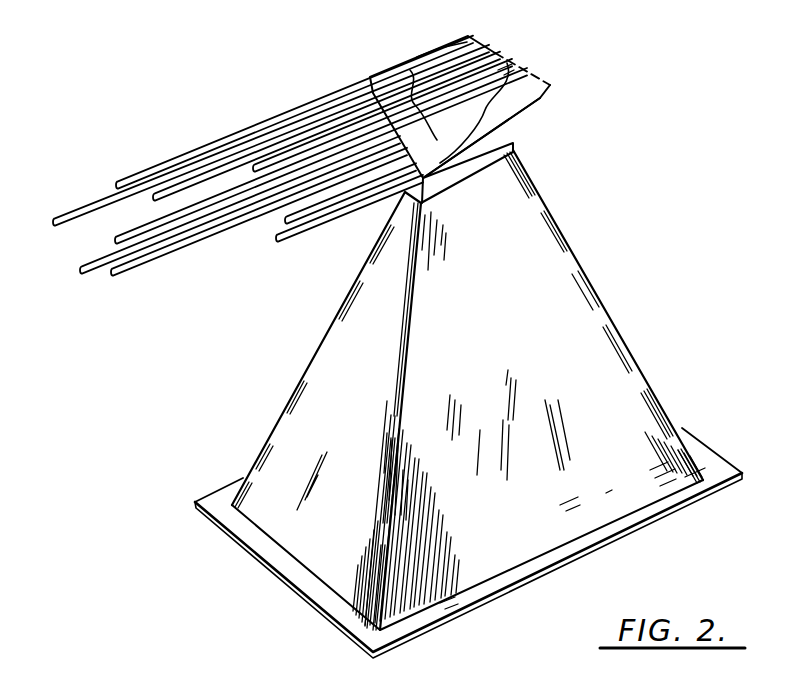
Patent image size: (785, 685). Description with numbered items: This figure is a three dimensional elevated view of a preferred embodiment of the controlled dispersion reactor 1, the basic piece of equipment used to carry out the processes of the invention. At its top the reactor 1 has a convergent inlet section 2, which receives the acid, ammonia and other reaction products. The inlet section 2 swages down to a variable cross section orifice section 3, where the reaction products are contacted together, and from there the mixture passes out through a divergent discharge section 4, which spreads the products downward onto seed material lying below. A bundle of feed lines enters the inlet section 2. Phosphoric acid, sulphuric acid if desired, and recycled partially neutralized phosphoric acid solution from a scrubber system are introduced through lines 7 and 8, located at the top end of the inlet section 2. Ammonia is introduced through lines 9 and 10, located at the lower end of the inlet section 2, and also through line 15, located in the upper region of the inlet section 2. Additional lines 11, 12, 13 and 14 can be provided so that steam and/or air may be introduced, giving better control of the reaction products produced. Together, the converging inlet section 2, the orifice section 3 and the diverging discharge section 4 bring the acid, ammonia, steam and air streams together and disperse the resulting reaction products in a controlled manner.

The controlled dispersion reactor 1 is at (649, 243).
The convergent inlet section 2 is at (530, 115).
The variable cross section orifice section 3 is at (507, 162).
The divergent discharge section 4 is at (622, 381).
The line 7 is at (283, 122).
The line 8 is at (152, 257).
The line 9 is at (300, 207).
The line 10 is at (323, 228).
The line 11 is at (90, 203).
The line 12 is at (110, 250).
The line 13 is at (208, 172).
The line 14 is at (193, 207).
The line 15 is at (500, 70).